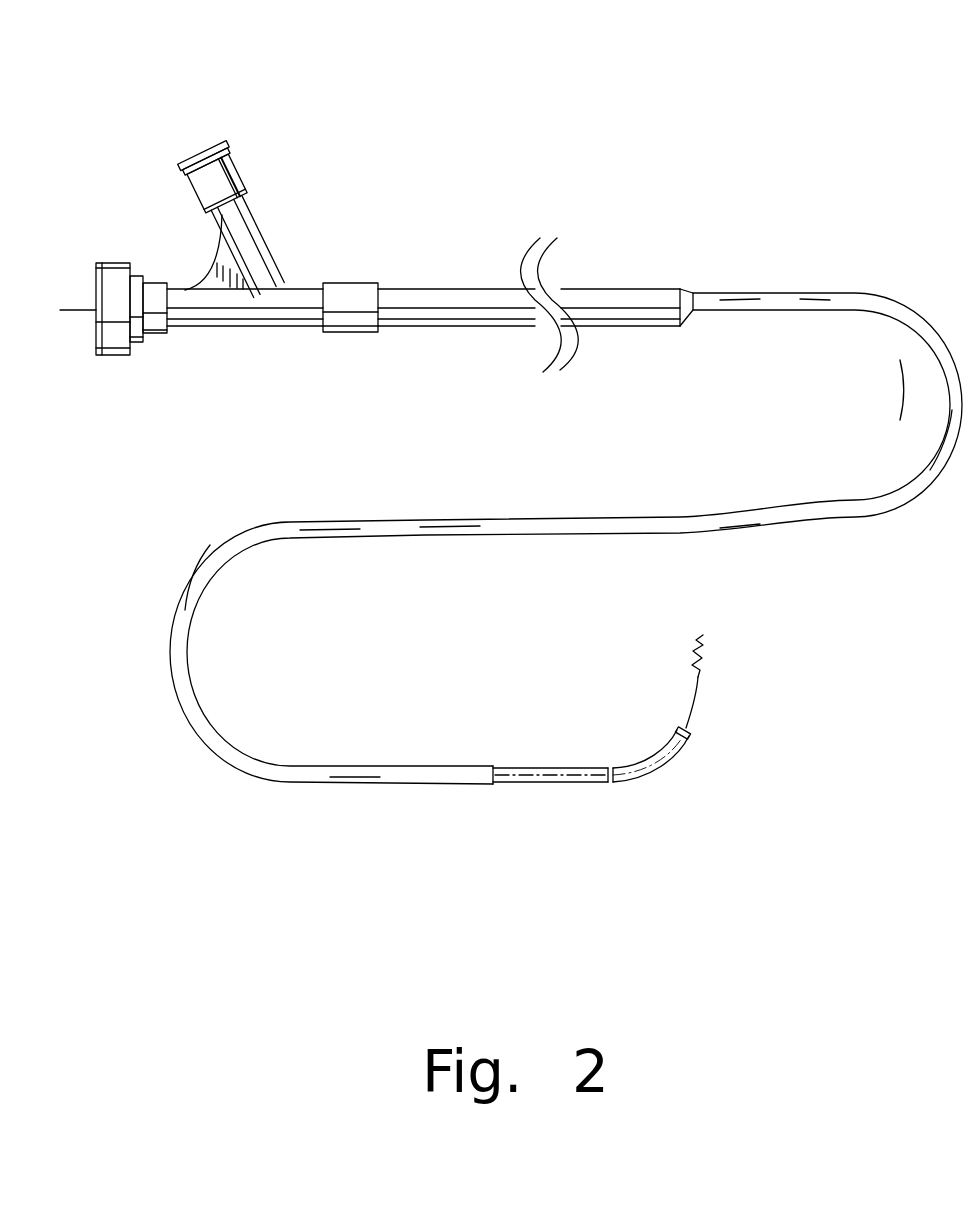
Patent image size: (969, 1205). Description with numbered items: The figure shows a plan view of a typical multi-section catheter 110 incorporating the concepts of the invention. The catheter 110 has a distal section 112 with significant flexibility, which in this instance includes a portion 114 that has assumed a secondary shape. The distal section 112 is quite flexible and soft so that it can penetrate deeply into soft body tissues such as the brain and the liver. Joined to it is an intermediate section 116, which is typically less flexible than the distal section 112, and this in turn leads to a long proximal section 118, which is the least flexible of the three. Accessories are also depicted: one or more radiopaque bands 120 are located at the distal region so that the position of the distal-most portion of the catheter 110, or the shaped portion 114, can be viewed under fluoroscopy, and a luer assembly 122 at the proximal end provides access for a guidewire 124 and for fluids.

The multi-section catheter 110 is at (810, 99).
The distal section 112 is at (720, 752).
The portion having a secondary shape 114 is at (677, 720).
The intermediate section 116 is at (424, 520).
The proximal section 118 is at (692, 223).
The radiopaque bands 120 is at (688, 738).
The luer assembly 122 is at (217, 328).
The guidewire 124 is at (78, 308).